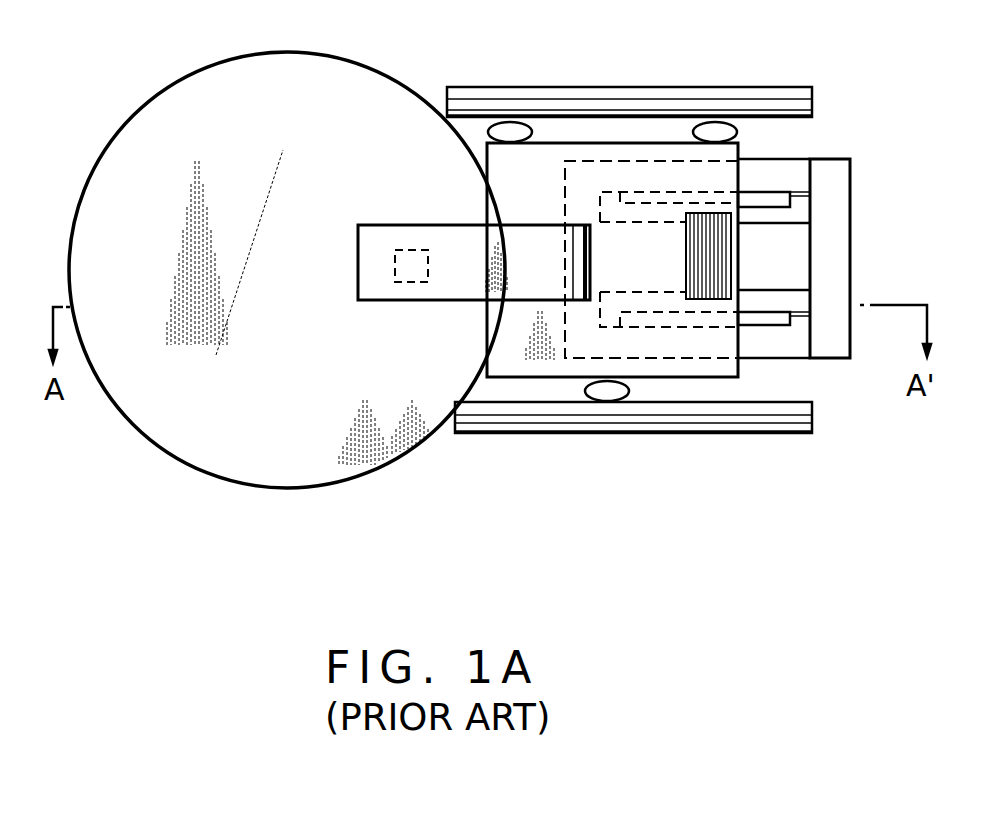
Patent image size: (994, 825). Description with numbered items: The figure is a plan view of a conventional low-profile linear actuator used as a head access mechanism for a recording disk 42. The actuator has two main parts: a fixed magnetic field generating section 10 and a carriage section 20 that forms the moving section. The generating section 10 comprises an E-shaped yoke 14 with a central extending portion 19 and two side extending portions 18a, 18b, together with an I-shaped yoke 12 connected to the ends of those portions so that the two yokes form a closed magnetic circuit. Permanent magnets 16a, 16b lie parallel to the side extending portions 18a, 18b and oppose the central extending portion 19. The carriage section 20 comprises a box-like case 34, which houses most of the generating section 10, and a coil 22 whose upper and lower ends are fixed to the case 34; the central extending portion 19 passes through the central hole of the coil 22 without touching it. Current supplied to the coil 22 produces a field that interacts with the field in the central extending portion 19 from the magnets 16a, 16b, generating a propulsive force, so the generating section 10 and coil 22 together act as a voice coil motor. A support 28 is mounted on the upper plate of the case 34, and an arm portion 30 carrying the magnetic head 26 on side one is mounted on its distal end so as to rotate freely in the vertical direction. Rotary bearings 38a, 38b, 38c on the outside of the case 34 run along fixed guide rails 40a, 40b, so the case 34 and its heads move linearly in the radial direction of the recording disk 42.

The fixed magnetic field generating section 10 is at (822, 262).
The I-shaped yoke 12 is at (848, 348).
The E-shaped yoke 14 is at (805, 358).
The permanent magnet 16a is at (792, 195).
The permanent magnet 16b is at (792, 316).
The side extending portion 18a is at (797, 163).
The side extending portion 18b is at (773, 350).
The central extending portion 19 is at (777, 243).
The carriage section 20 is at (748, 145).
The coil 22 is at (732, 269).
The magnetic head 26 is at (395, 268).
The support 28 is at (591, 262).
The arm portion 30 is at (455, 301).
The case 34 is at (533, 380).
The rotary bearing 38a is at (715, 127).
The rotary bearing 38b is at (509, 127).
The rotary bearing 38c is at (612, 396).
The fixed guide rail 40a is at (797, 87).
The fixed guide rail 40b is at (790, 434).
The recording disk 42 is at (148, 428).